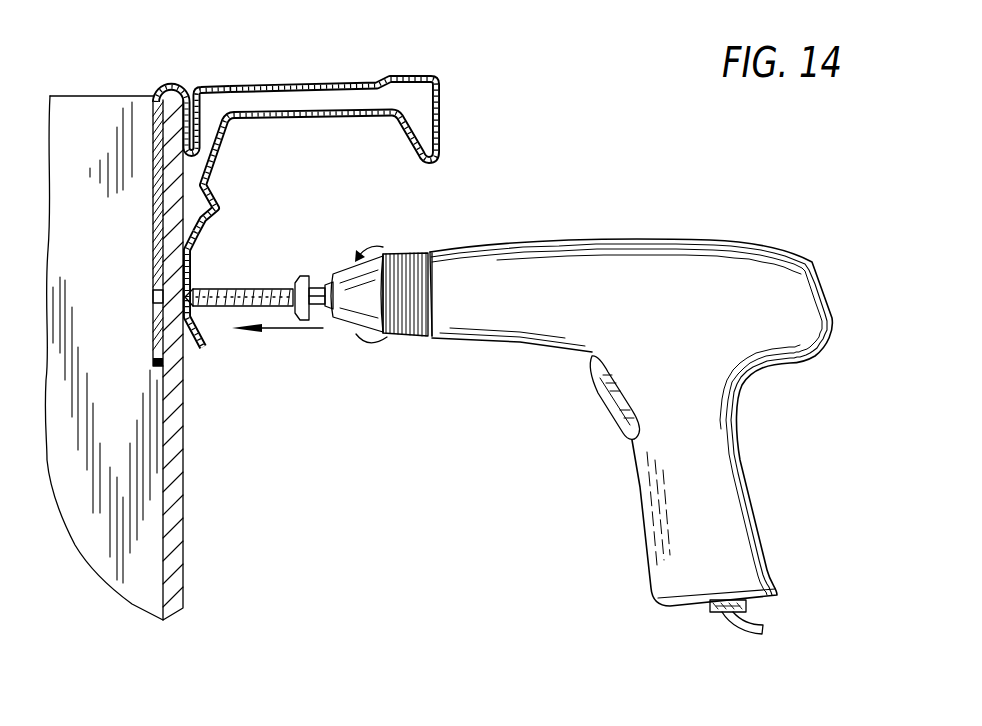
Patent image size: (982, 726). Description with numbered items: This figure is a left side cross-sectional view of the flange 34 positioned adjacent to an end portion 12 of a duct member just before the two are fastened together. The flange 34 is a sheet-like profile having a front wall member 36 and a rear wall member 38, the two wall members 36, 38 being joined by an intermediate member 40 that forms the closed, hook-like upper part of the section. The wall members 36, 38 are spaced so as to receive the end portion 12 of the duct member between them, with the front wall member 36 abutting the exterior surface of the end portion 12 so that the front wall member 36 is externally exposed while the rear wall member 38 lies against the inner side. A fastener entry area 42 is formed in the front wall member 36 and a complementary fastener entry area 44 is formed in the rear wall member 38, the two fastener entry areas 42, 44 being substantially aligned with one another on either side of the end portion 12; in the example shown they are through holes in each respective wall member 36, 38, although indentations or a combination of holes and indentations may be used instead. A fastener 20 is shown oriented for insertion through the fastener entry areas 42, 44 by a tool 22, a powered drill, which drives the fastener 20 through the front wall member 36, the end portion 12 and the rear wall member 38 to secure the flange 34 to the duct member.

The end portion of a duct member 12 is at (180, 537).
The fastener 20 is at (253, 288).
The tool 22 is at (555, 310).
The flange 34 is at (456, 137).
The front wall member 36 is at (192, 263).
The rear wall member 38 is at (155, 257).
The intermediate member 40 is at (176, 82).
The fastener entry area 42 is at (192, 307).
The fastener entry area 44 is at (155, 298).